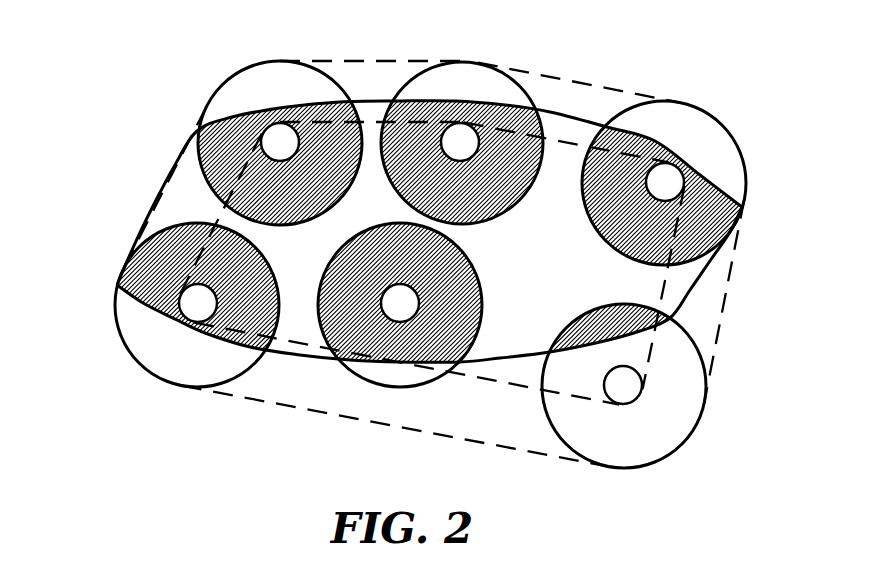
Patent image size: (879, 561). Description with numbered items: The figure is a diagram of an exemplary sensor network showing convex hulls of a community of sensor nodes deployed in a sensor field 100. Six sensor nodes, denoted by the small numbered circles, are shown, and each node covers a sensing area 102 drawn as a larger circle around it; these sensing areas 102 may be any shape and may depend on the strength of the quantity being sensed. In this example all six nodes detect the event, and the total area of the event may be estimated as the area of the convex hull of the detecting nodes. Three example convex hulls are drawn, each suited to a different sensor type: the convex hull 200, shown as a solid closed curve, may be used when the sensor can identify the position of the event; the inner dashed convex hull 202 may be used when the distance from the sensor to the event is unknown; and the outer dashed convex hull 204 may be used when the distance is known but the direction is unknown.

The sensor field 100 is at (122, 468).
The sensing area 102 is at (218, 88).
The convex hull 200 is at (568, 114).
The convex hull 202 is at (533, 388).
The convex hull 204 is at (386, 424).